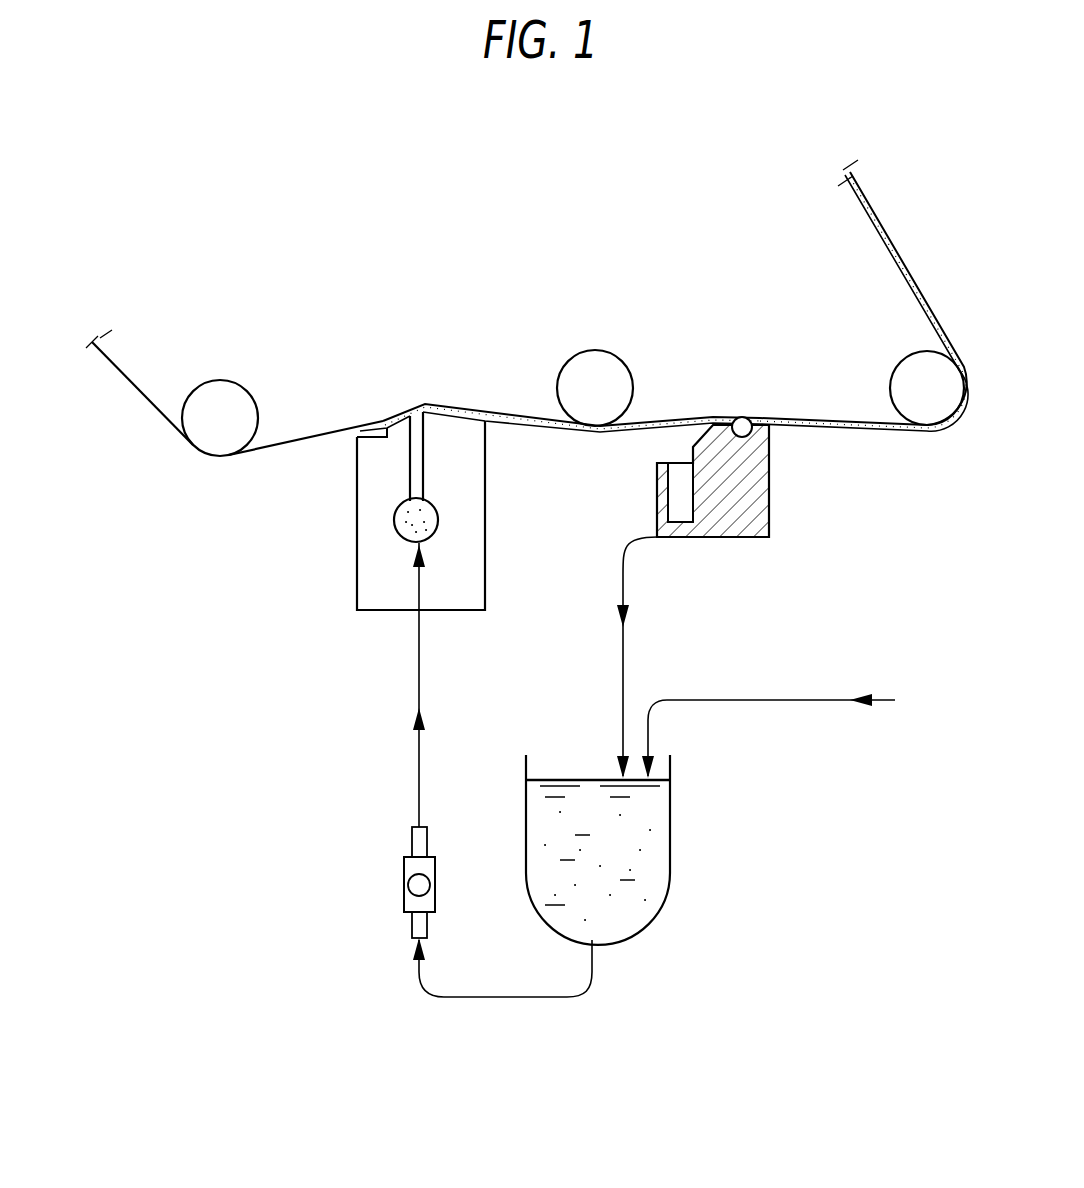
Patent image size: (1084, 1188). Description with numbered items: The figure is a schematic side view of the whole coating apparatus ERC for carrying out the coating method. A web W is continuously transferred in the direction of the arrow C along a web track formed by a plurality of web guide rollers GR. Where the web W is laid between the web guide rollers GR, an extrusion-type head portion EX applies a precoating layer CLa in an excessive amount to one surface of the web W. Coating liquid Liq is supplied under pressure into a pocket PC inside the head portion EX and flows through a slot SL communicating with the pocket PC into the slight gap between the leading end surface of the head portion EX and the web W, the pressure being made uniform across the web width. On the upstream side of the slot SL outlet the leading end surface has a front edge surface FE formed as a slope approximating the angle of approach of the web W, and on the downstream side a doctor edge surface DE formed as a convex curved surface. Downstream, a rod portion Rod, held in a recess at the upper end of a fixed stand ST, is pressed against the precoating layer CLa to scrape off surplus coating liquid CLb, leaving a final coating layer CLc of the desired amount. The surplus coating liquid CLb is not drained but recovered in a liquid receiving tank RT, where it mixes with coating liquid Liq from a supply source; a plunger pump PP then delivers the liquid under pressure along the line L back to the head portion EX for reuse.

The coating apparatus ERC is at (332, 243).
The web W is at (138, 385).
The web guide rollers GR is at (250, 402).
The arrow (direction of web transfer) C is at (848, 220).
The precoating layer CLa is at (527, 427).
The final coating layer CLc is at (848, 426).
The doctor edge surface DE is at (445, 426).
The front edge surface FE is at (386, 440).
The slot SL is at (425, 485).
The pocket PC is at (394, 528).
The fixed stand ST is at (770, 518).
The rod portion Rod is at (770, 455).
The extrusion-type head portion EX is at (262, 629).
The surplus coating liquid CLb is at (623, 582).
The coating liquid supply line L is at (419, 655).
The liquid receiving tank RT is at (671, 815).
The coating liquid Liq is at (613, 852).
The plunger pump PP is at (403, 881).